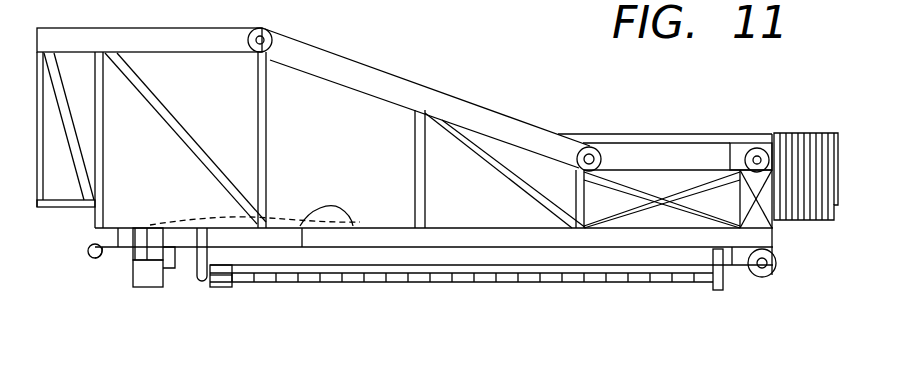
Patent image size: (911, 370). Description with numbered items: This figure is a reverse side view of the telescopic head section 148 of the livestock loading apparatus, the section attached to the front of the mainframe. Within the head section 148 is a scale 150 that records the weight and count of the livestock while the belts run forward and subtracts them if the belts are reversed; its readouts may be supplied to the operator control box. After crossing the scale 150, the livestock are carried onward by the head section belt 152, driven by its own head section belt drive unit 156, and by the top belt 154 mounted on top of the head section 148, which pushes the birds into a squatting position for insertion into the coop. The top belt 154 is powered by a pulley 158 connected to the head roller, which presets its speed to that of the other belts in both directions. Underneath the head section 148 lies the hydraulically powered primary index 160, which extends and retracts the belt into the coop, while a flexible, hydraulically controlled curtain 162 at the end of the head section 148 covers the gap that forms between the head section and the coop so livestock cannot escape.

The head section 148 is at (436, 72).
The scale 150 is at (262, 238).
The head section belt 152 is at (352, 228).
The top belt 154 is at (486, 118).
The head section belt drive unit 156 is at (760, 282).
The pulley 158 is at (753, 147).
The primary index 160 is at (540, 283).
The curtain 162 is at (826, 133).